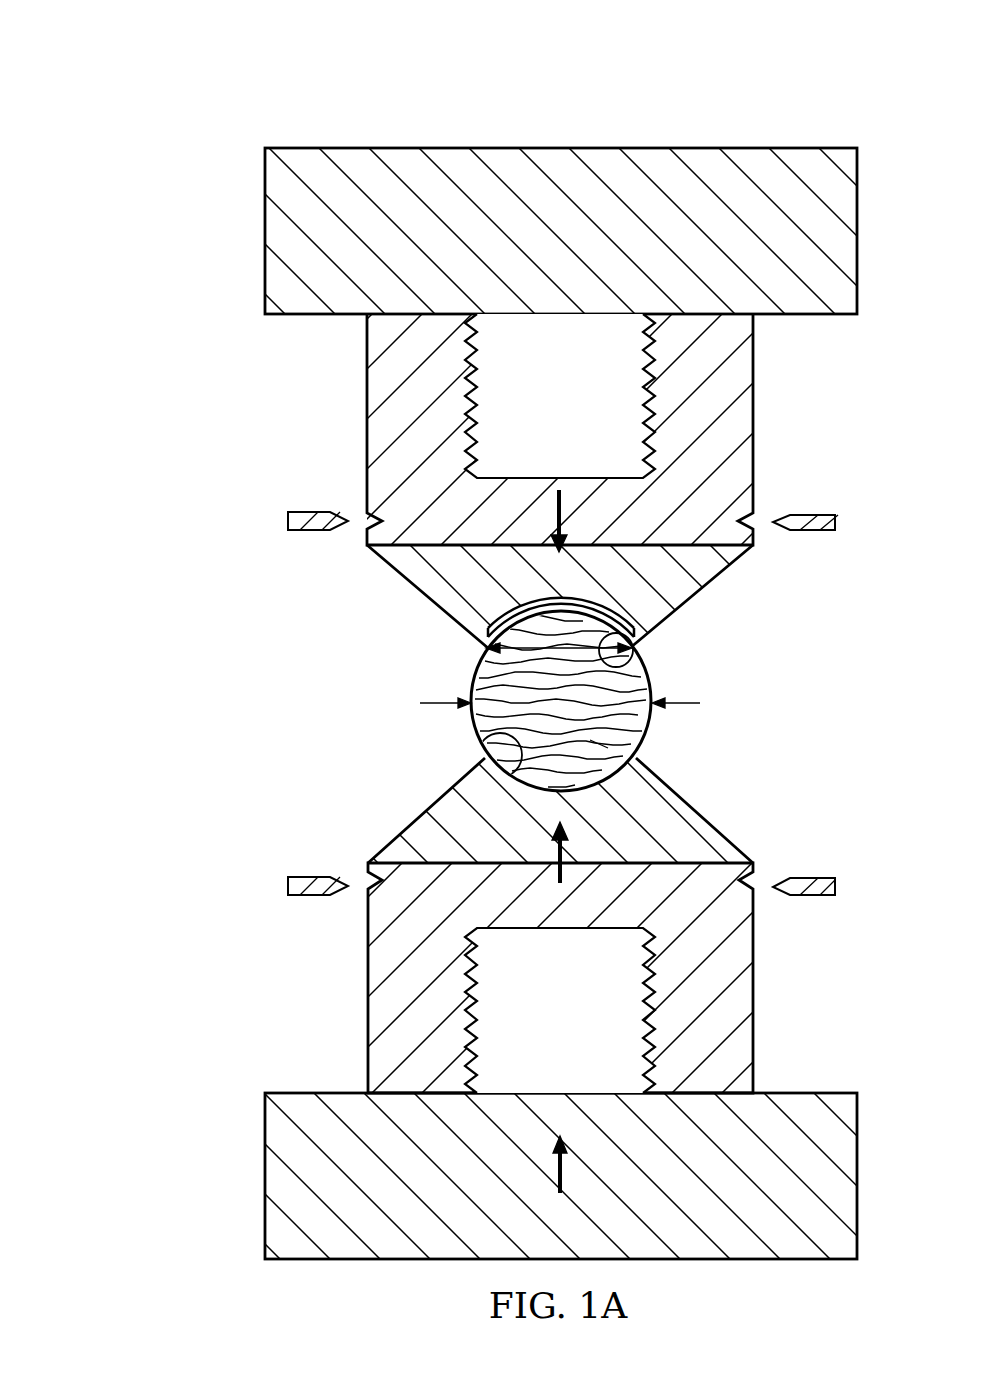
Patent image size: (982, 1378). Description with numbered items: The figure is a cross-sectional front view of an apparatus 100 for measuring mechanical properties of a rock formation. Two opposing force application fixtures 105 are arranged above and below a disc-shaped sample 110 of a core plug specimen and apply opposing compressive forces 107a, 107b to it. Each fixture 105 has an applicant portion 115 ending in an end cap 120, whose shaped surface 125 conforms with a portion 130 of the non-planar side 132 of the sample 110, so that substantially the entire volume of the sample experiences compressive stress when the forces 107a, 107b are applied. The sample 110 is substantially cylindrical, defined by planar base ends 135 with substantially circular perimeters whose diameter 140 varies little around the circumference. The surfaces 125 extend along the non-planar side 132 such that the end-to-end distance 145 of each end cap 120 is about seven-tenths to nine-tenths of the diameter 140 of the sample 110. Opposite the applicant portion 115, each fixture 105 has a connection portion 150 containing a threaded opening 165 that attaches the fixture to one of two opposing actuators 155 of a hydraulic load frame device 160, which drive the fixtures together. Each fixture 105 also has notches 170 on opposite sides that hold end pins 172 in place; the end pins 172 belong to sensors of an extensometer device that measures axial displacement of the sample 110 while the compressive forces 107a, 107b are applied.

The apparatus 100 is at (521, 629).
The force application fixture 105 is at (531, 559).
The compressive force 107a is at (556, 498).
The compressive force 107b is at (566, 878).
The disc-shaped sample 110 is at (566, 701).
The applicant portion 115 is at (422, 580).
The end cap 120 is at (480, 650).
The shaped surface 125 is at (636, 652).
The portion of non-planar side 130 is at (561, 598).
The non-planar side 132 is at (468, 714).
The planar base end 135 is at (600, 748).
The diameter 140 is at (683, 704).
The end-to-end distance 145 is at (560, 652).
The connection portion 150 is at (377, 380).
The actuator 155 is at (274, 218).
The load frame device 160 is at (523, 629).
The threaded opening 165 is at (648, 336).
The notch 170 is at (352, 516).
The end pin 172 is at (818, 513).